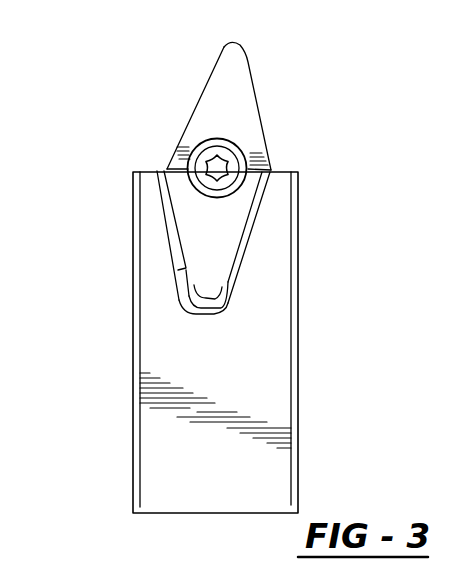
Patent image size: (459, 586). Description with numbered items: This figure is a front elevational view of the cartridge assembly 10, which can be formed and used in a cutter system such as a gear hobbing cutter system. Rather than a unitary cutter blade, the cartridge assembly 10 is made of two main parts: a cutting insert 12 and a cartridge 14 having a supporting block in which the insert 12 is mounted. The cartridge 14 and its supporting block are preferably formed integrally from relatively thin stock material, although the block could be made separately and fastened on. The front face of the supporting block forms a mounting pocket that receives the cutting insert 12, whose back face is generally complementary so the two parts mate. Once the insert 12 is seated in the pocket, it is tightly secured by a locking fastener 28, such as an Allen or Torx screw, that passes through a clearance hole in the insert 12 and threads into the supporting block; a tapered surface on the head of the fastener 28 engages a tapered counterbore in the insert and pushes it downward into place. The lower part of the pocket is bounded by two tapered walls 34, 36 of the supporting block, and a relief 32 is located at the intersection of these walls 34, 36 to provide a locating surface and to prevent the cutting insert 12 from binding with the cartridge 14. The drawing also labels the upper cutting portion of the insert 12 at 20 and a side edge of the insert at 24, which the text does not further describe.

The cartridge assembly 10 is at (316, 199).
The cutting insert 12 is at (233, 93).
The cartridge 14 is at (130, 476).
The cutting edge of insert 20 is at (253, 78).
The side edge of insert 24 is at (194, 104).
The locking fastener 28 is at (210, 156).
The relief 32 is at (210, 316).
The tapered wall 34 is at (247, 249).
The tapered wall 36 is at (168, 232).